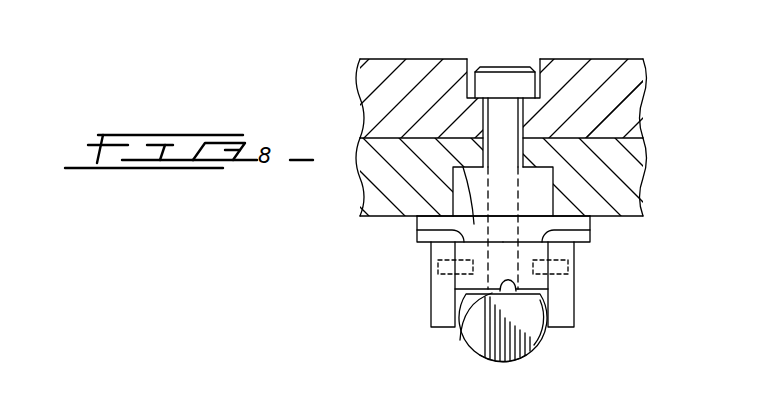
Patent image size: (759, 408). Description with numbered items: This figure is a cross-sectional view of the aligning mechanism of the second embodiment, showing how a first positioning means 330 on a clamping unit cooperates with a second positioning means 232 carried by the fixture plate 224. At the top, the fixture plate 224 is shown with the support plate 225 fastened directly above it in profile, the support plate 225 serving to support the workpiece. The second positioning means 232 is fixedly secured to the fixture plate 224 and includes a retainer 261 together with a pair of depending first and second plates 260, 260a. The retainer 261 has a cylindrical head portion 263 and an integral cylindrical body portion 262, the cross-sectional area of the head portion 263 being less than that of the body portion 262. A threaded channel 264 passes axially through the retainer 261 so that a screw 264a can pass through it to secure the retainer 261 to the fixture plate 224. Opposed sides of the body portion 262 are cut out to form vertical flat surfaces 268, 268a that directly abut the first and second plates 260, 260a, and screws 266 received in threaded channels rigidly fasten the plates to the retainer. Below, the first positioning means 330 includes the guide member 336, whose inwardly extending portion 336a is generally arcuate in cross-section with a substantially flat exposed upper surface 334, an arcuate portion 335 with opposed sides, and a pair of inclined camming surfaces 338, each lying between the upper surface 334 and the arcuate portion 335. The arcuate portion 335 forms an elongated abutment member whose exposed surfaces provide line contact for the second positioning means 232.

The fixture plate 224 is at (646, 147).
The support plate 225 is at (627, 77).
The second positioning means 232 is at (557, 211).
The retainer 261 is at (441, 221).
The body portion 262 is at (463, 167).
The head portion 263 is at (541, 185).
The threaded channel 264 is at (519, 189).
The screw 264a is at (503, 82).
The screws 266 is at (437, 270).
The vertical flat surface 268 is at (417, 231).
The vertical flat surface 268a is at (590, 231).
The first depending plate 260 is at (442, 250).
The second depending plate 260a is at (552, 251).
The inclined camming surfaces 338 is at (458, 292).
The upper surface 334 is at (506, 281).
The first positioning means 330 is at (484, 362).
The arcuate portion 335 is at (522, 356).
The guide member 336 is at (528, 313).
The inwardly extending portion 336a is at (523, 336).